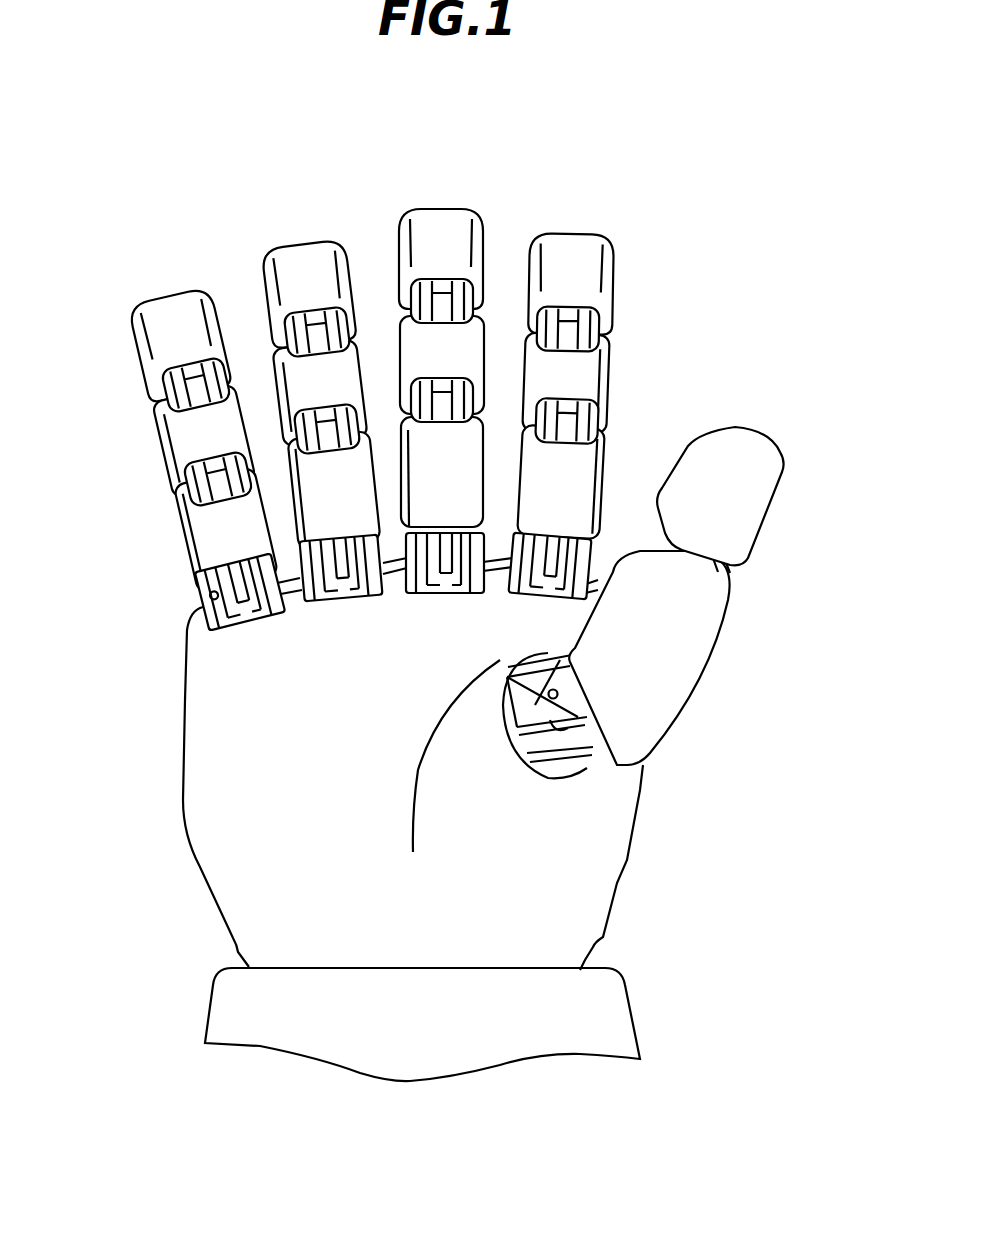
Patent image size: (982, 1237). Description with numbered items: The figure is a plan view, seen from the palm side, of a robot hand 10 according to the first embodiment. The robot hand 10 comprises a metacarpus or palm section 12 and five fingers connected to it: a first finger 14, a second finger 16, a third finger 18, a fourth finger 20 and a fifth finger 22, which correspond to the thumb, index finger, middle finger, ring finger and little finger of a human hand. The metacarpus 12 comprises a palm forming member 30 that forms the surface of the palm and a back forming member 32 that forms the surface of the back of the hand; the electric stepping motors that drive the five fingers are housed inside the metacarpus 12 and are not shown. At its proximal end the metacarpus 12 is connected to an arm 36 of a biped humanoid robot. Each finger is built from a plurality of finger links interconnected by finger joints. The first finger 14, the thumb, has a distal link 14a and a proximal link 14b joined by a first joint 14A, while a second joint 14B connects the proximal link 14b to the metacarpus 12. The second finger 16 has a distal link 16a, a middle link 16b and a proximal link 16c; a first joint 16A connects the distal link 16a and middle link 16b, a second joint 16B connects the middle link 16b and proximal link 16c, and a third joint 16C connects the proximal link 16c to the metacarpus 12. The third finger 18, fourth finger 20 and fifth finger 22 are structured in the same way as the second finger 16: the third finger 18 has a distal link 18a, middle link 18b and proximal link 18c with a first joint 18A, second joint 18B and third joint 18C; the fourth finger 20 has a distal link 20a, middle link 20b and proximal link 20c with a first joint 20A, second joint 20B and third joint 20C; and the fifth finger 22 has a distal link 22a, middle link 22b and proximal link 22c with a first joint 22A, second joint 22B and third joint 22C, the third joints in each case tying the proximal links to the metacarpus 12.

The robot hand 10 is at (655, 888).
The metacarpus 12 is at (198, 870).
The first finger 14 is at (765, 418).
The distal link 14a is at (743, 507).
The proximal link 14b is at (666, 652).
The first joint 14A is at (740, 575).
The second joint 14B is at (590, 772).
The second finger 16 is at (577, 214).
The distal link 16a is at (593, 285).
The middle link 16b is at (591, 389).
The proximal link 16c is at (583, 504).
The first joint 16A is at (612, 336).
The second joint 16B is at (605, 436).
The third joint 16C is at (537, 607).
The third finger 18 is at (455, 192).
The distal link 18a is at (463, 261).
The middle link 18b is at (463, 362).
The proximal link 18c is at (463, 487).
The first joint 18A is at (480, 312).
The second joint 18B is at (480, 412).
The third joint 18C is at (440, 597).
The fourth finger 20 is at (298, 222).
The distal link 20a is at (335, 289).
The middle link 20b is at (343, 392).
The proximal link 20c is at (359, 507).
The first joint 20A is at (352, 332).
The second joint 20B is at (363, 438).
The third joint 20C is at (348, 608).
The fifth finger 22 is at (170, 290).
The distal link 22a is at (213, 342).
The middle link 22b is at (233, 437).
The proximal link 22c is at (251, 544).
The first joint 22A is at (150, 390).
The second joint 22B is at (175, 495).
The third joint 22C is at (245, 634).
The palm forming member 30 is at (240, 765).
The back forming member 32 is at (188, 619).
The arm 36 is at (633, 1020).